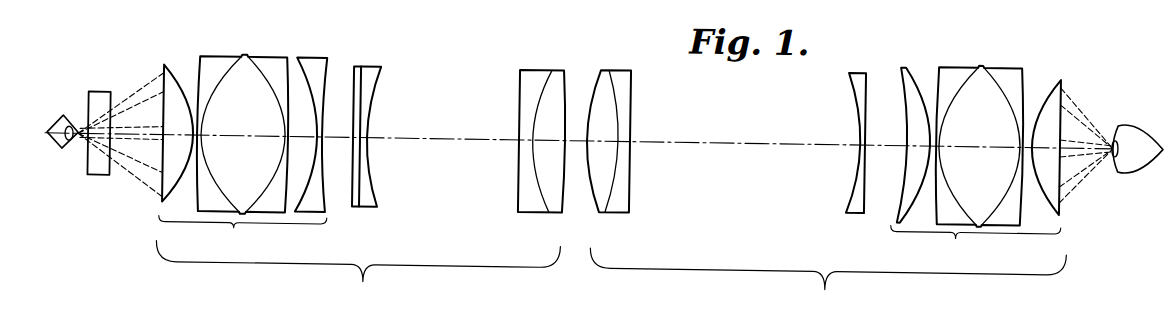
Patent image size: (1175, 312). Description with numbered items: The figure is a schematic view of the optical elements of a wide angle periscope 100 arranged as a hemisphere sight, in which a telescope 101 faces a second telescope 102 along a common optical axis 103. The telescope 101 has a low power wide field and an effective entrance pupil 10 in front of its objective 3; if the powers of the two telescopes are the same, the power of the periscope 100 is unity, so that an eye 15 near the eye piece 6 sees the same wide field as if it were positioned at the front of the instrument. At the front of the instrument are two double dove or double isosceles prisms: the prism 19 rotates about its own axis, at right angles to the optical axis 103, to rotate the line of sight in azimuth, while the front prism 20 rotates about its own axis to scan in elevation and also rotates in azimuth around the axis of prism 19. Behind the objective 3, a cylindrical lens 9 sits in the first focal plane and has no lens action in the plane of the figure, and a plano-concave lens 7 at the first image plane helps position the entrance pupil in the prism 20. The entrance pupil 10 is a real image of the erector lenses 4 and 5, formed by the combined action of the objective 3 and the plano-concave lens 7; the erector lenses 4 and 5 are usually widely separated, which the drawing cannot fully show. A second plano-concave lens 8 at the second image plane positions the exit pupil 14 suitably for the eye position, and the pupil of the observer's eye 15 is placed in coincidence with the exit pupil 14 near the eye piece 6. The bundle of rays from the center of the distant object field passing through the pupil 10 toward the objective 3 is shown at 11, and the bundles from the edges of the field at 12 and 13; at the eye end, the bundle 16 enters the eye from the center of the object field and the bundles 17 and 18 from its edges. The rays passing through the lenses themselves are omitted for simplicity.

The objective lens 3 is at (243, 152).
The erector lens 4 is at (532, 208).
The erector lens 5 is at (616, 212).
The eye piece 6 is at (976, 164).
The plano-concave lens 7 is at (375, 193).
The plano-concave lens 8 is at (857, 205).
The cylindrical lens 9 is at (359, 213).
The entrance pupil 10 is at (66, 146).
The bundle of rays from center of object field 11 is at (134, 147).
The bundle of rays from edge of object field 12 is at (138, 97).
The bundle of rays from edge of object field 13 is at (133, 184).
The exit pupil 14 is at (1110, 150).
The eye 15 is at (1133, 128).
The bundle of rays from center of object field 16 is at (1098, 122).
The bundle of rays from edge of object field 17 is at (1080, 104).
The bundle of rays from edge of object field 18 is at (1078, 181).
The prism 19 is at (104, 99).
The front prism 20 is at (55, 133).
The periscope 100 is at (565, 54).
The telescope 101 is at (358, 275).
The telescope 102 is at (828, 280).
The optical axis 103 is at (432, 141).